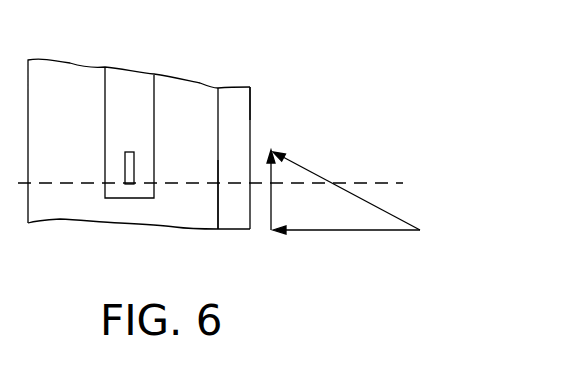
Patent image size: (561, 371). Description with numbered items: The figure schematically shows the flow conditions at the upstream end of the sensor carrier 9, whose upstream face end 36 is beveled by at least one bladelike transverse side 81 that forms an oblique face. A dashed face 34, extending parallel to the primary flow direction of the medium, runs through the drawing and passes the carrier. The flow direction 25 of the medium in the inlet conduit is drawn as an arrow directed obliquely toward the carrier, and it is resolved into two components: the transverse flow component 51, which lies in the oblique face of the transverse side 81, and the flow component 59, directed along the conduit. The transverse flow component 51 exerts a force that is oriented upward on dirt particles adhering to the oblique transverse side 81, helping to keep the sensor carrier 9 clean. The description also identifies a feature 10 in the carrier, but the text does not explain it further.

The sensor carrier 9 is at (68, 75).
The pocket / insert 10 is at (125, 157).
The upstream face end 36 is at (250, 102).
The transverse side 81 is at (233, 208).
The face 34 is at (377, 183).
The transverse flow component 51 is at (270, 215).
The flow component 59 is at (378, 232).
The flow direction 25 is at (322, 177).